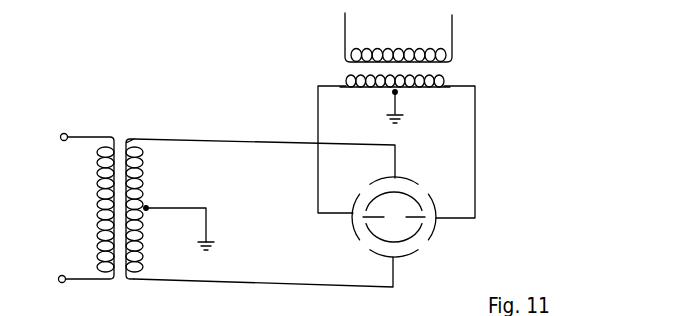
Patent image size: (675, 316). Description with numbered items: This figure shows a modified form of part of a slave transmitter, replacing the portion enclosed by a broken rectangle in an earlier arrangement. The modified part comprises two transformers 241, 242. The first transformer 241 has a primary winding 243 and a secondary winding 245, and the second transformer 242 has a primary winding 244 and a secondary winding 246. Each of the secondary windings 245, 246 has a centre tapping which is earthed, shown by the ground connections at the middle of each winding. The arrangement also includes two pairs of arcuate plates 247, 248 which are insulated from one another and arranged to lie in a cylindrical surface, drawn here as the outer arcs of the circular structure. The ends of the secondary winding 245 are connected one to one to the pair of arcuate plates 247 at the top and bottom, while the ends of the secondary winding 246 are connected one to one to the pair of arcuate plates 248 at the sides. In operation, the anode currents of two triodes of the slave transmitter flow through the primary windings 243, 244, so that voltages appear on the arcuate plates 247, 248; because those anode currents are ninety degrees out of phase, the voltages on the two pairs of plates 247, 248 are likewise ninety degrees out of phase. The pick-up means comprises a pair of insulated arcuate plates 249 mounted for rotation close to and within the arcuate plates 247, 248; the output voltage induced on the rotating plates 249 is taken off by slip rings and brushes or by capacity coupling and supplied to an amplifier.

The transformer 241 is at (133, 133).
The transformer 242 is at (493, 78).
The primary winding 243 is at (87, 208).
The primary winding 244 is at (398, 37).
The secondary winding 245 is at (260, 213).
The secondary winding 246 is at (395, 99).
The arcuate plates 247 is at (399, 217).
The arcuate plates 248 is at (353, 227).
The arcuate plates 249 is at (413, 198).